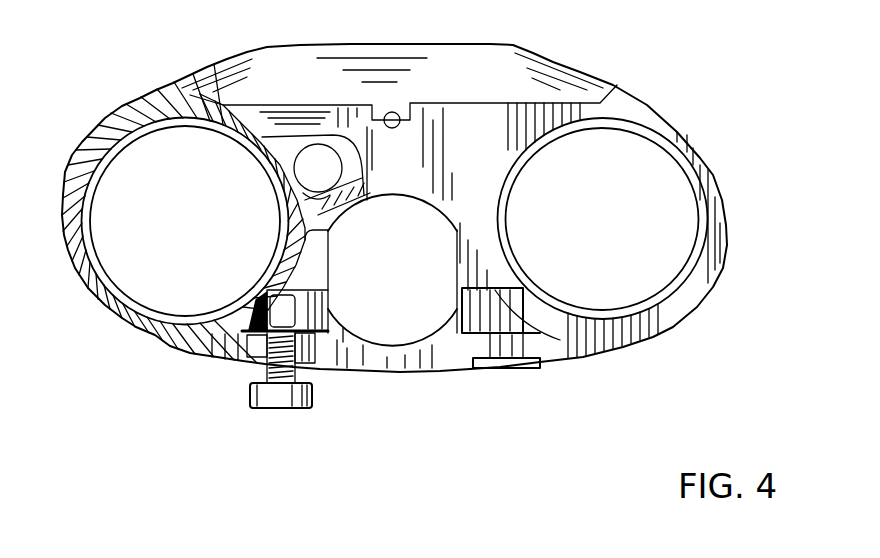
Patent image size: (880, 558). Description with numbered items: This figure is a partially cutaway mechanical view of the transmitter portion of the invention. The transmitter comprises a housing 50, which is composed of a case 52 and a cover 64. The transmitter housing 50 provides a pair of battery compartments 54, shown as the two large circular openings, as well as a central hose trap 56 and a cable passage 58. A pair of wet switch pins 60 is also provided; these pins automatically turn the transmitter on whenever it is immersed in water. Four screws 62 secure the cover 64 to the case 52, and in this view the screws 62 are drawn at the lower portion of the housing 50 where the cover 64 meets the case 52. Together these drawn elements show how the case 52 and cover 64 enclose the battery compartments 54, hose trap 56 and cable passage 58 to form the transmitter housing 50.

The housing 50 is at (137, 87).
The case 52 is at (645, 101).
The battery compartments 54 is at (105, 265).
The hose trap 56 is at (418, 345).
The cable passage 58 is at (312, 163).
The wet switch pins 60 is at (394, 113).
The screws 62 is at (273, 395).
The cover 64 is at (333, 362).